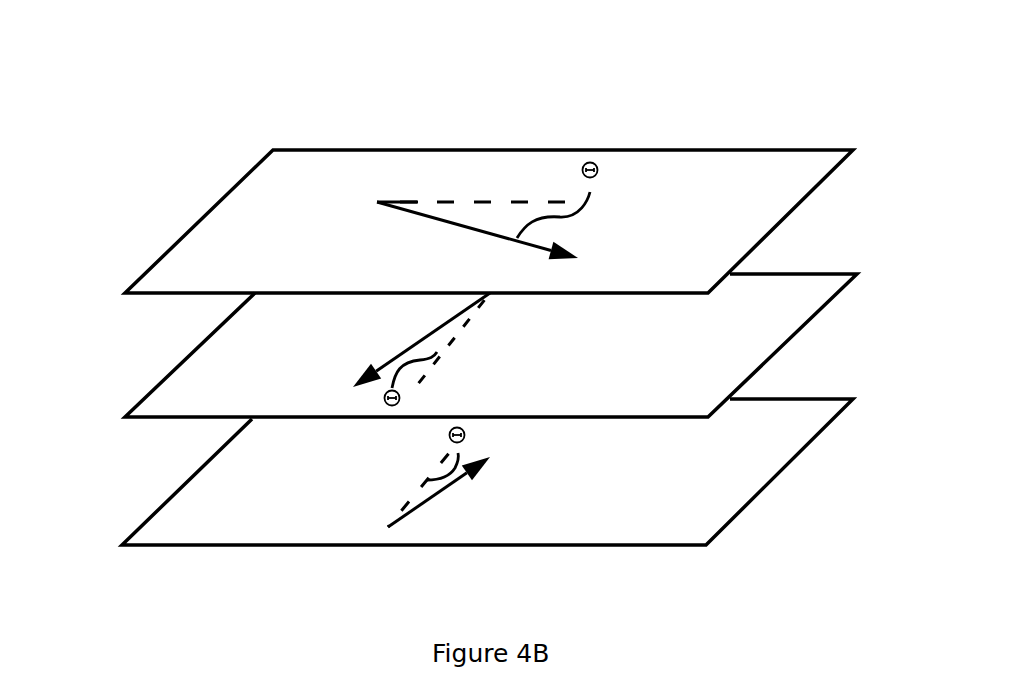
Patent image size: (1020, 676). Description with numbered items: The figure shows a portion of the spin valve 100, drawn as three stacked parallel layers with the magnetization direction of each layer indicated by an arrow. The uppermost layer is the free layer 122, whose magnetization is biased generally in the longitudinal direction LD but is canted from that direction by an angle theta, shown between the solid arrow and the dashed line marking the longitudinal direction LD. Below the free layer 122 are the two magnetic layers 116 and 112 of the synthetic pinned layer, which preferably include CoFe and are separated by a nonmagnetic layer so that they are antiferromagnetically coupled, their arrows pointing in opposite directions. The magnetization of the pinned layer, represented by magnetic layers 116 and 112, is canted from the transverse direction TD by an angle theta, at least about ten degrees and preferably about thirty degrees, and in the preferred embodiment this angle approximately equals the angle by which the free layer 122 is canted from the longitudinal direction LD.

The spin valve 100 is at (513, 76).
The free layer 122 is at (311, 149).
The magnetic layer 116 is at (148, 419).
The magnetic layer 112 is at (148, 547).
The longitudinal direction LD is at (492, 202).
The transverse direction TD is at (453, 348).